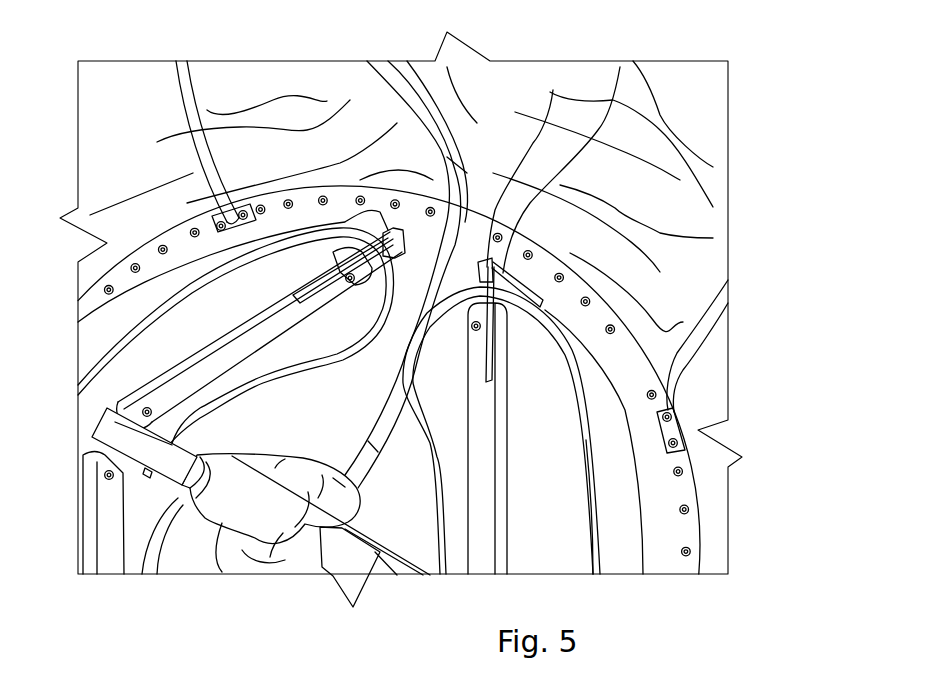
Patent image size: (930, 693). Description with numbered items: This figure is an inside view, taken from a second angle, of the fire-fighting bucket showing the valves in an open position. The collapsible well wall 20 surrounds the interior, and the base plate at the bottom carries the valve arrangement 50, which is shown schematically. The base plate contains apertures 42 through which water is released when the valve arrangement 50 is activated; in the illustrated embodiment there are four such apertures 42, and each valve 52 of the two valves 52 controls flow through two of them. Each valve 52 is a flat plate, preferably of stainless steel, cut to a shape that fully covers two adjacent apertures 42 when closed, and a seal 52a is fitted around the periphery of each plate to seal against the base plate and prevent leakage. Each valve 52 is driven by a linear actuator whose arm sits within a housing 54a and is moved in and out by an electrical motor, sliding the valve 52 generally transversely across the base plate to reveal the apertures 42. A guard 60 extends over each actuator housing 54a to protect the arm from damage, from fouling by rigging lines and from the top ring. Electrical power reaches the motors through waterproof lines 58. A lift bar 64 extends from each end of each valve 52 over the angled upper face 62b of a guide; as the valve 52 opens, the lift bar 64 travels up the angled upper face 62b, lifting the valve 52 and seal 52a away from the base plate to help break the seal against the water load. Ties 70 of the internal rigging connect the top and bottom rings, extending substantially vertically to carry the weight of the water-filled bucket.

The well wall 20 is at (688, 132).
The aperture 42 is at (610, 525).
The valve arrangement 50 is at (303, 445).
The valve 52 is at (236, 298).
The seal 52a is at (595, 550).
The housing 54a is at (155, 567).
The waterproof lines 58 is at (460, 112).
The guard 60 is at (112, 437).
The angled upper face 62b is at (620, 67).
The lift bar 64 is at (335, 262).
The ties 70 is at (192, 88).